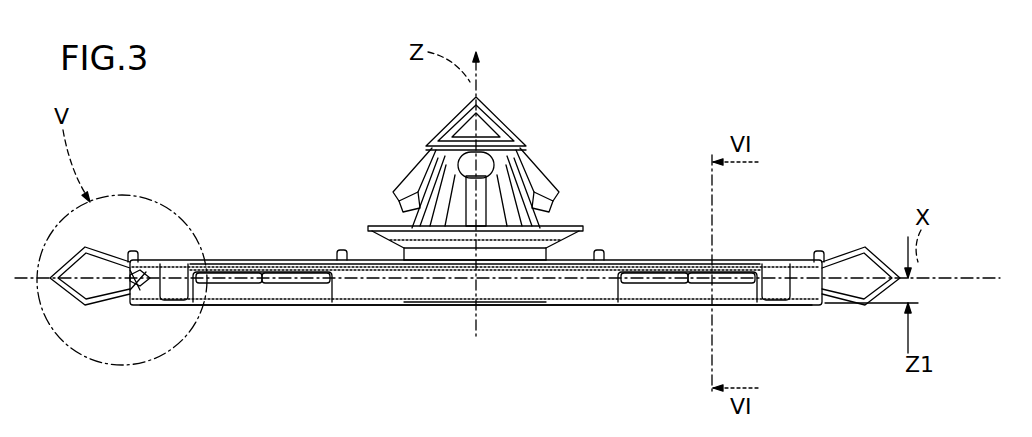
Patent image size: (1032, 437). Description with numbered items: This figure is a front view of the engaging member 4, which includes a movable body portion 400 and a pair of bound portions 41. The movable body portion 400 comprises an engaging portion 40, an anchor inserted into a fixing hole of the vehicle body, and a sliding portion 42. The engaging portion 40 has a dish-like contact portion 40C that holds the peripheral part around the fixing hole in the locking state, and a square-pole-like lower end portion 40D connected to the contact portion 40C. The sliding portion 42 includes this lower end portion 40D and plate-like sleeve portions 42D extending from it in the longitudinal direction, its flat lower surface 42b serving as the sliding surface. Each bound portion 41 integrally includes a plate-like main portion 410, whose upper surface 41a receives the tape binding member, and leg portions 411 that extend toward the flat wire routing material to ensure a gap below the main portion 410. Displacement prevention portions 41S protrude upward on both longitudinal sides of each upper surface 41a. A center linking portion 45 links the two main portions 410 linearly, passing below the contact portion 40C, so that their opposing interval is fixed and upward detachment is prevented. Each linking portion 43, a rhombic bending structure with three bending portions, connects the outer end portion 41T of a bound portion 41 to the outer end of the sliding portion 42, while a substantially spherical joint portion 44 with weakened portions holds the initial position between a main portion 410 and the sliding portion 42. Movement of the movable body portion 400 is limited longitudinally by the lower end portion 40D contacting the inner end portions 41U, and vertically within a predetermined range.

The engaging member 4 is at (255, 103).
The movable body portion 400 is at (610, 45).
The engaging portion 40 is at (508, 116).
The sliding portion 42 is at (663, 272).
The bound portion 41 is at (263, 252).
The upper surface 41a is at (305, 262).
The main portion 410 is at (236, 262).
The leg portion 411 is at (176, 298).
The displacement prevention portion 41S is at (493, 190).
The outer end portion 41T is at (133, 252).
The inner end portion 41U is at (341, 256).
The sleeve portion 42D is at (262, 290).
The lower surface 42b is at (305, 303).
The linking portion 43 is at (60, 242).
The joint portion 44 is at (140, 300).
The center linking portion 45 is at (418, 272).
The contact portion 40C is at (385, 226).
The lower end portion 40D is at (496, 255).